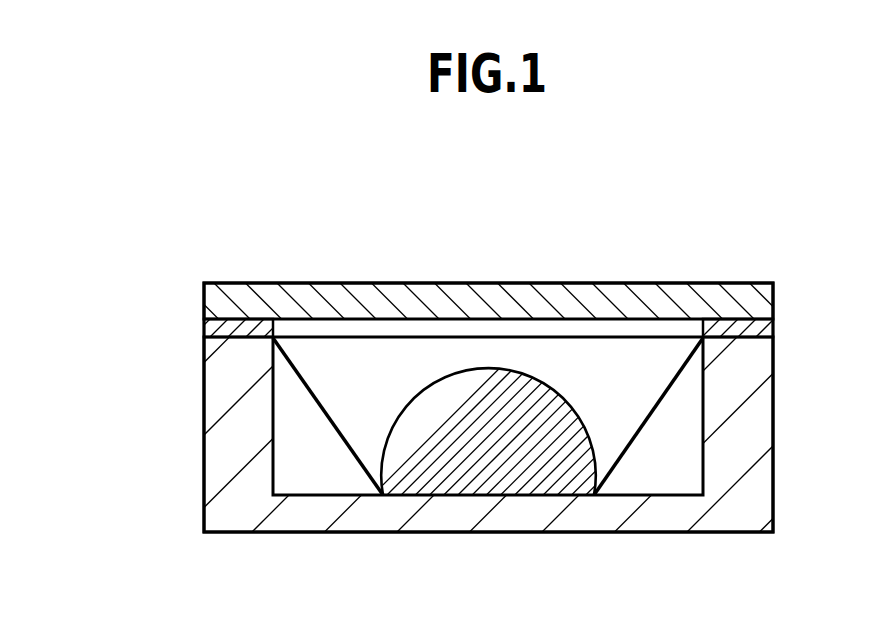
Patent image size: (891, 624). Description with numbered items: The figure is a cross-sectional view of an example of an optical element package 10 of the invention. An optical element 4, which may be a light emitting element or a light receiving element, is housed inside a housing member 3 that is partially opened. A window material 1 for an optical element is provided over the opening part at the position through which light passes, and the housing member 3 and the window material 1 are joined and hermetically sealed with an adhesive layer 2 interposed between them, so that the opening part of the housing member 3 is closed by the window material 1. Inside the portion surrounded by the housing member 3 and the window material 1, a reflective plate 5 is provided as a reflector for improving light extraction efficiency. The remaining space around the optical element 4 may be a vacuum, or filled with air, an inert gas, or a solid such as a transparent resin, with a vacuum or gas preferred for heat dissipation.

The optical element package 10 is at (648, 240).
The window material for an optical element 1 is at (755, 300).
The adhesive layer 2 is at (755, 331).
The housing member 3 is at (753, 435).
The optical element 4 is at (523, 462).
The reflective plate 5 is at (329, 421).